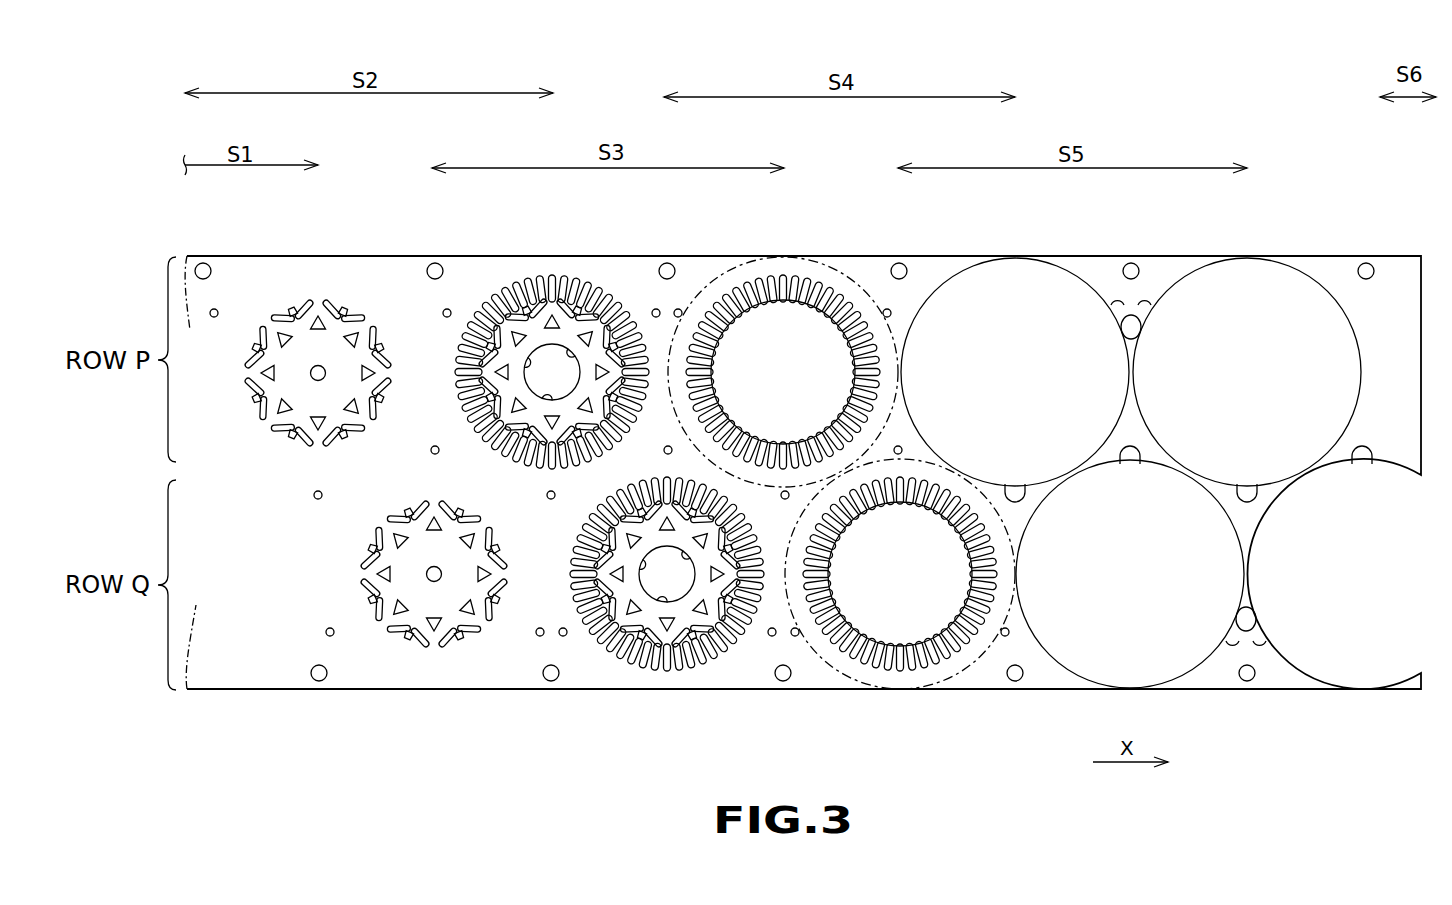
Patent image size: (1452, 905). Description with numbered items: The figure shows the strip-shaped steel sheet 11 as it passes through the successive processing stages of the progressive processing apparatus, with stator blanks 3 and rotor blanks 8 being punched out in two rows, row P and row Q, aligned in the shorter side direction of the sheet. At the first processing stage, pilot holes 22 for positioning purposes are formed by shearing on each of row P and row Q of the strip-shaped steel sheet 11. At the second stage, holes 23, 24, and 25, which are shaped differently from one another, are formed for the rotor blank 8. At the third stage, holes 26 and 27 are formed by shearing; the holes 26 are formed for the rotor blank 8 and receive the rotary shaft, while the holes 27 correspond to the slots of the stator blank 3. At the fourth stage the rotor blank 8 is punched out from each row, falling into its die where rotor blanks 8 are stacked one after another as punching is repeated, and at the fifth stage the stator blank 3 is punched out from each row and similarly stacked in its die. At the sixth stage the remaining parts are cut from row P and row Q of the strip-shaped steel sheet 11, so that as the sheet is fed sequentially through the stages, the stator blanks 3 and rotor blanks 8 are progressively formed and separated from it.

The stator blank 3 is at (836, 262).
The rotor blank 8 is at (484, 304).
The strip-shaped steel sheet 11 is at (331, 256).
The pilot holes 22 is at (206, 264).
The hole 23 is at (326, 368).
The hole 24 is at (283, 331).
The hole 25 is at (356, 322).
The hole 26 is at (577, 350).
The holes 27 is at (530, 292).